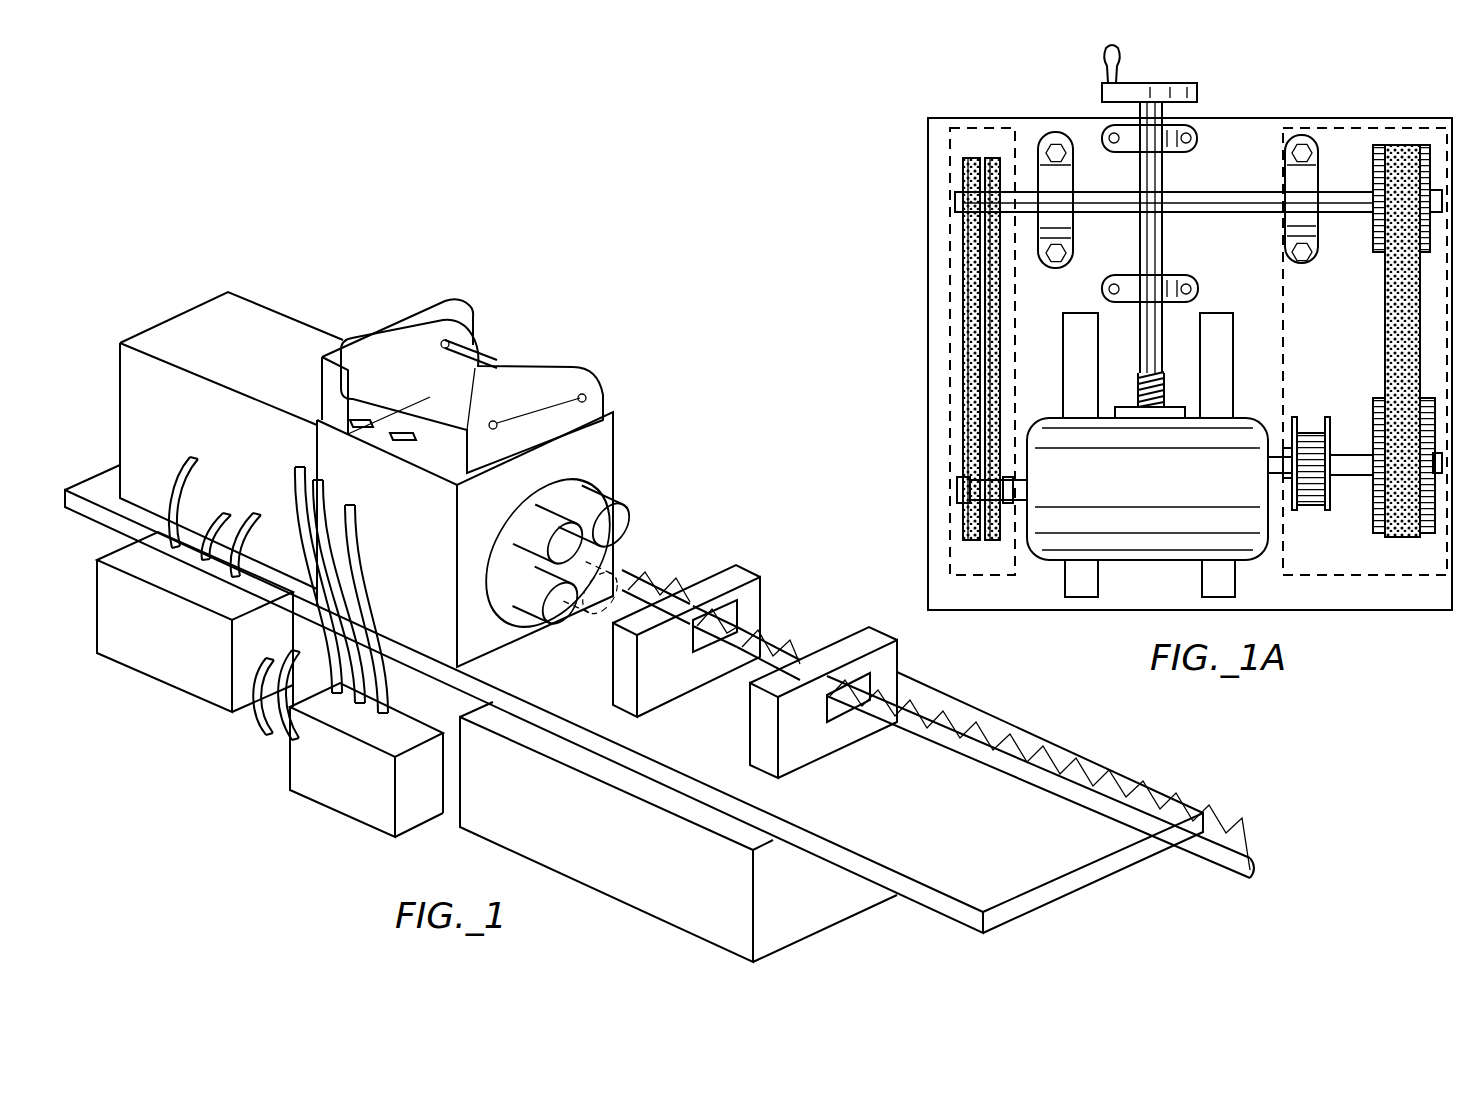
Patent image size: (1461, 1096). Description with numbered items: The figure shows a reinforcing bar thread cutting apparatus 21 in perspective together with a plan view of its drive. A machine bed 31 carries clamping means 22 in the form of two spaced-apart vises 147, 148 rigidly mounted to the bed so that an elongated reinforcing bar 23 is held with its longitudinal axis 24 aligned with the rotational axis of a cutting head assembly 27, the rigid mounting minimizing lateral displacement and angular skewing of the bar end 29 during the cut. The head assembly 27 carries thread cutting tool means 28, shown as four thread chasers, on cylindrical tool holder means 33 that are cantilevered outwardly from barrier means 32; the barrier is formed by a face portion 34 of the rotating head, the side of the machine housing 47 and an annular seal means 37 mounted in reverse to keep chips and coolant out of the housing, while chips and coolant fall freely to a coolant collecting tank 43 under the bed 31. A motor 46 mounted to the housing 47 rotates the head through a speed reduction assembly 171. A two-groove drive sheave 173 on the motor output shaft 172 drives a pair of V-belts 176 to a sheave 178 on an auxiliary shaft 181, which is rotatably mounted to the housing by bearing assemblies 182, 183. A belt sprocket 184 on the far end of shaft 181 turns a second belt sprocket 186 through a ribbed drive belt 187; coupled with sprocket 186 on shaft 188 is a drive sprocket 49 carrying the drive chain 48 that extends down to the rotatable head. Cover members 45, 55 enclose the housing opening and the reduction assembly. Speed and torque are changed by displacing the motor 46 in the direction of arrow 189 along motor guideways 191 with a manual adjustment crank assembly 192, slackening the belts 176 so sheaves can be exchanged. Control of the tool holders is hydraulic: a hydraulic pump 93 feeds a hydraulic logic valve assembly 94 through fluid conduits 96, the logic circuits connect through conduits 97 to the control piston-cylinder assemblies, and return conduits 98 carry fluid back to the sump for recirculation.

In FIG. 1, the thread cutting apparatus 21 is at (716, 370).
In FIG. 1, the clamping means 22 is at (748, 538).
In FIG. 1, the reinforcing bar 23 is at (1033, 767).
In FIG. 1, the longitudinal axis 24 is at (1135, 798).
In FIG. 1, the cutting head assembly 27 is at (660, 491).
In FIG. 1, the thread cutting tool means 28 is at (633, 506).
In FIG. 1, the bar end 29 is at (625, 587).
In FIG. 1, the machine bed 31 is at (105, 483).
In FIG. 1, the barrier means 32 is at (578, 478).
In FIG. 1, the tool holder means 33 is at (527, 513).
In FIG. 1, the face portion 34 is at (507, 563).
In FIG. 1, the annular seal means 37 is at (493, 543).
In FIG. 1, the coolant collecting tank 43 is at (790, 922).
In FIG. 1, the cover member 45 is at (573, 412).
In FIG. 1A, the cover member 45 is at (1283, 260).
In FIG. 1, the motor 46 is at (367, 380).
In FIG. 1A, the motor 46 is at (1240, 490).
In FIG. 1, the machine housing 47 is at (323, 447).
In FIG. 1A, the machine housing 47 is at (930, 363).
In FIG. 1A, the drive chain 48 is at (1303, 418).
In FIG. 1A, the drive sprocket 49 is at (1330, 435).
In FIG. 1, the cover member 55 is at (437, 302).
In FIG. 1A, the cover member 55 is at (947, 232).
In FIG. 1, the hydraulic pump 93 is at (188, 670).
In FIG. 1, the hydraulic logic valve assembly 94 is at (352, 797).
In FIG. 1, the fluid conduits 96 is at (272, 728).
In FIG. 1, the conduits 97 is at (318, 560).
In FIG. 1, the return conduits 98 is at (207, 507).
In FIG. 1, the vise 147 is at (760, 730).
In FIG. 1, the vise 148 is at (747, 608).
In FIG. 1A, the speed reduction assembly 171 is at (860, 80).
In FIG. 1A, the motor output shaft 172 is at (960, 487).
In FIG. 1A, the drive sheave 173 is at (985, 455).
In FIG. 1A, the V-belts 176 is at (985, 277).
In FIG. 1A, the sheave 178 is at (985, 162).
In FIG. 1, the auxiliary shaft 181 is at (487, 347).
In FIG. 1A, the auxiliary shaft 181 is at (955, 203).
In FIG. 1A, the bearing assembly 182 is at (1047, 167).
In FIG. 1A, the bearing assembly 183 is at (1307, 140).
In FIG. 1A, the belt sprocket 184 is at (1373, 157).
In FIG. 1A, the belt sprocket 186 is at (1380, 533).
In FIG. 1A, the ribbed drive belt 187 is at (1387, 302).
In FIG. 1, the shaft 188 is at (588, 378).
In FIG. 1A, the shaft 188 is at (1358, 480).
In FIG. 1A, the arrow 189 is at (1078, 448).
In FIG. 1, the motor guideways 191 is at (365, 432).
In FIG. 1A, the motor guideways 191 is at (1080, 315).
In FIG. 1A, the manual adjustment crank assembly 192 is at (1193, 70).